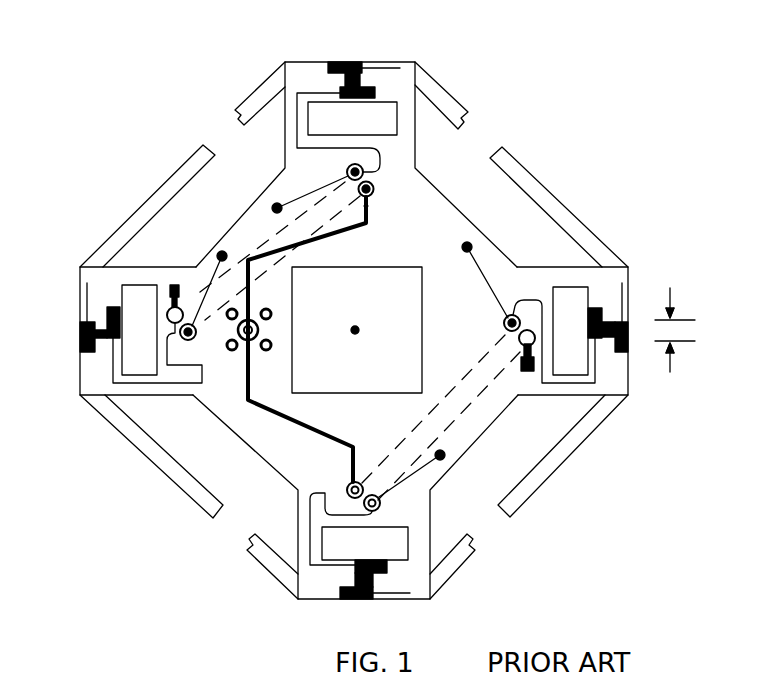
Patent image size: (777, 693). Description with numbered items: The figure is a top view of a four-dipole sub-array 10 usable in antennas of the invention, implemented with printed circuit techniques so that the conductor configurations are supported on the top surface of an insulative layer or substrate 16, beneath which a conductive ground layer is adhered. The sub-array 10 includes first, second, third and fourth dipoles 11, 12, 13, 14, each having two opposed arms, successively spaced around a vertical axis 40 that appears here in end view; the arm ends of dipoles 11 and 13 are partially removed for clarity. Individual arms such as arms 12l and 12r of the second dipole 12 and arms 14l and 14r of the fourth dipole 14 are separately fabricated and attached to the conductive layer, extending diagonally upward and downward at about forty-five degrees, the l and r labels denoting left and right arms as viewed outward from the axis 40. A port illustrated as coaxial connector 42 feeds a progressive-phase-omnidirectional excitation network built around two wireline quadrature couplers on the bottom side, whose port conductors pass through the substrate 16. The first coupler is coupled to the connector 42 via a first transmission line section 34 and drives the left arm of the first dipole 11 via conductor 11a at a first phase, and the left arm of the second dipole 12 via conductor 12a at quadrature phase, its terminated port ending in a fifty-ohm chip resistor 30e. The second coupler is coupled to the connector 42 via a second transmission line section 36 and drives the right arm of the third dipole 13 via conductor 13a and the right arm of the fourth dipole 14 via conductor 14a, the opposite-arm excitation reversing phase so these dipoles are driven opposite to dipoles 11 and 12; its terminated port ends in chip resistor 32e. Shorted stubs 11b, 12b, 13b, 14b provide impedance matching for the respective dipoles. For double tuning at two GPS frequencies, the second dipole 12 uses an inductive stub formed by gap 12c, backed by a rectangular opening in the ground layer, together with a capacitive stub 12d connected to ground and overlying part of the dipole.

The four-dipole sub-array 10 is at (528, 91).
The first dipole 11 is at (318, 599).
The conductor 11a is at (310, 537).
The shorted stub 11b is at (442, 458).
The second dipole 12 is at (632, 391).
The conductor 12a is at (547, 384).
The shorted stub 12b is at (480, 273).
The gap 12c is at (688, 332).
The capacitive stub 12d is at (623, 293).
The left arm of second dipole 12l is at (537, 178).
The right arm of second dipole 12r is at (573, 455).
The third dipole 13 is at (305, 60).
The conductor 13a is at (364, 172).
The shorted stub 13b is at (276, 205).
The fourth dipole 14 is at (78, 366).
The conductor 14a is at (162, 384).
The shorted stub 14b is at (220, 254).
The left arm of fourth dipole 14l is at (163, 475).
The right arm of fourth dipole 14r is at (155, 190).
The insulative layer or substrate 16 is at (371, 422).
The chip resistor 30e is at (522, 350).
The chip resistor 32e is at (170, 281).
The first transmission line section 34 is at (288, 419).
The second transmission line section 36 is at (370, 220).
The vertical axis 40 is at (357, 328).
The coaxial connector 42 is at (259, 327).